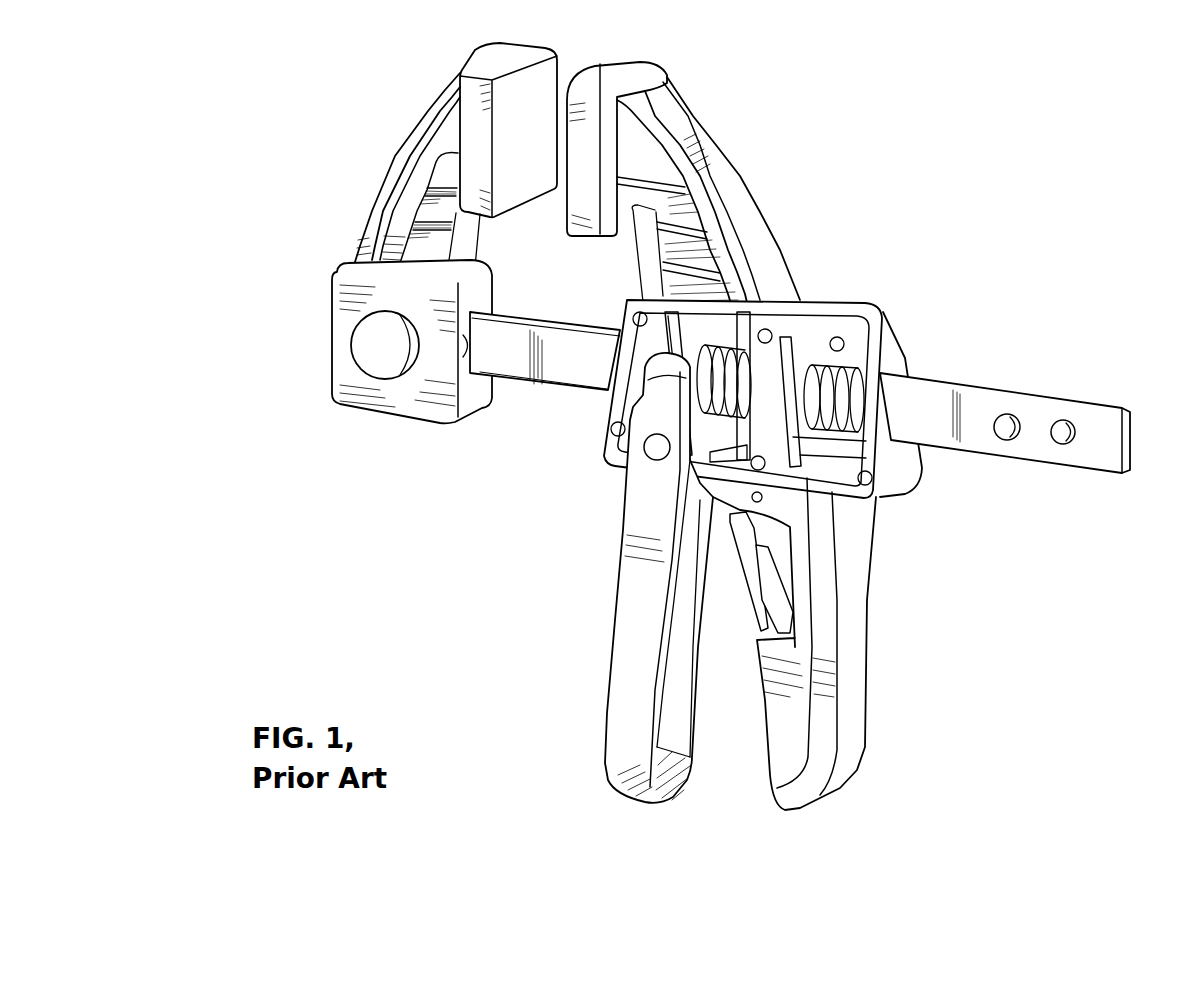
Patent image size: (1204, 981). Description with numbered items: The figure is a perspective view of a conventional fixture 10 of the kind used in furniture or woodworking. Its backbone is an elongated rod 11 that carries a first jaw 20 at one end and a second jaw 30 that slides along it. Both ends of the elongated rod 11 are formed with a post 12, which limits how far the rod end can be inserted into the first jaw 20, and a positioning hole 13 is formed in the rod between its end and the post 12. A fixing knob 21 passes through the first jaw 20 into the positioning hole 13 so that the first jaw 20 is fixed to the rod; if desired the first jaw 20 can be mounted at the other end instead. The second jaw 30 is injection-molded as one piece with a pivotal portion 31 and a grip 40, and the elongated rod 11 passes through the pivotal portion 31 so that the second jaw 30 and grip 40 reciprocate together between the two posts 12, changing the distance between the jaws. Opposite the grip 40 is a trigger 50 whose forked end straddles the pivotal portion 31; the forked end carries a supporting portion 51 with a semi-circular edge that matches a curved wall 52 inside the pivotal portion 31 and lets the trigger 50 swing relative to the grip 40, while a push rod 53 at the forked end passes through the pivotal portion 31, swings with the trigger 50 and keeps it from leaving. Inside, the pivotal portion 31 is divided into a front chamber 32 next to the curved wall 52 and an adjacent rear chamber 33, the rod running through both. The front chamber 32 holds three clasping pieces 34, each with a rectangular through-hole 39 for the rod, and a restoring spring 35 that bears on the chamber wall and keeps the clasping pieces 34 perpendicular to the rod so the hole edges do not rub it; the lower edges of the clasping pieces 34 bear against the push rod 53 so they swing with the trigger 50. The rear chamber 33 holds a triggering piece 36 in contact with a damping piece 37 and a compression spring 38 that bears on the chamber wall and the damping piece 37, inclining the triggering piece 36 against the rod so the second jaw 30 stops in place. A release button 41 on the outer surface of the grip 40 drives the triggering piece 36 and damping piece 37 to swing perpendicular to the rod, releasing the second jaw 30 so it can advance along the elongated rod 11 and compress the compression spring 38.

The fixture 10 is at (382, 535).
The elongated rod 11 is at (1090, 400).
The post 12 is at (1007, 442).
The positioning hole 13 is at (1063, 445).
The first jaw 20 is at (402, 163).
The fixing knob 21 is at (367, 350).
The second jaw 30 is at (720, 182).
The pivotal portion 31 is at (897, 473).
The front chamber 32 is at (617, 328).
The rear chamber 33 is at (822, 502).
The clasping piece 34 is at (668, 322).
The restoring spring 35 is at (703, 347).
The triggering piece 36 is at (745, 340).
The damping piece 37 is at (790, 340).
The compression spring 38 is at (850, 360).
The rectangular through-hole 39 is at (663, 290).
The grip 40 is at (847, 570).
The release button 41 is at (763, 567).
The trigger 50 is at (633, 587).
The supporting portion 51 is at (663, 377).
The curved wall 52 is at (597, 393).
The push rod 53 is at (652, 450).